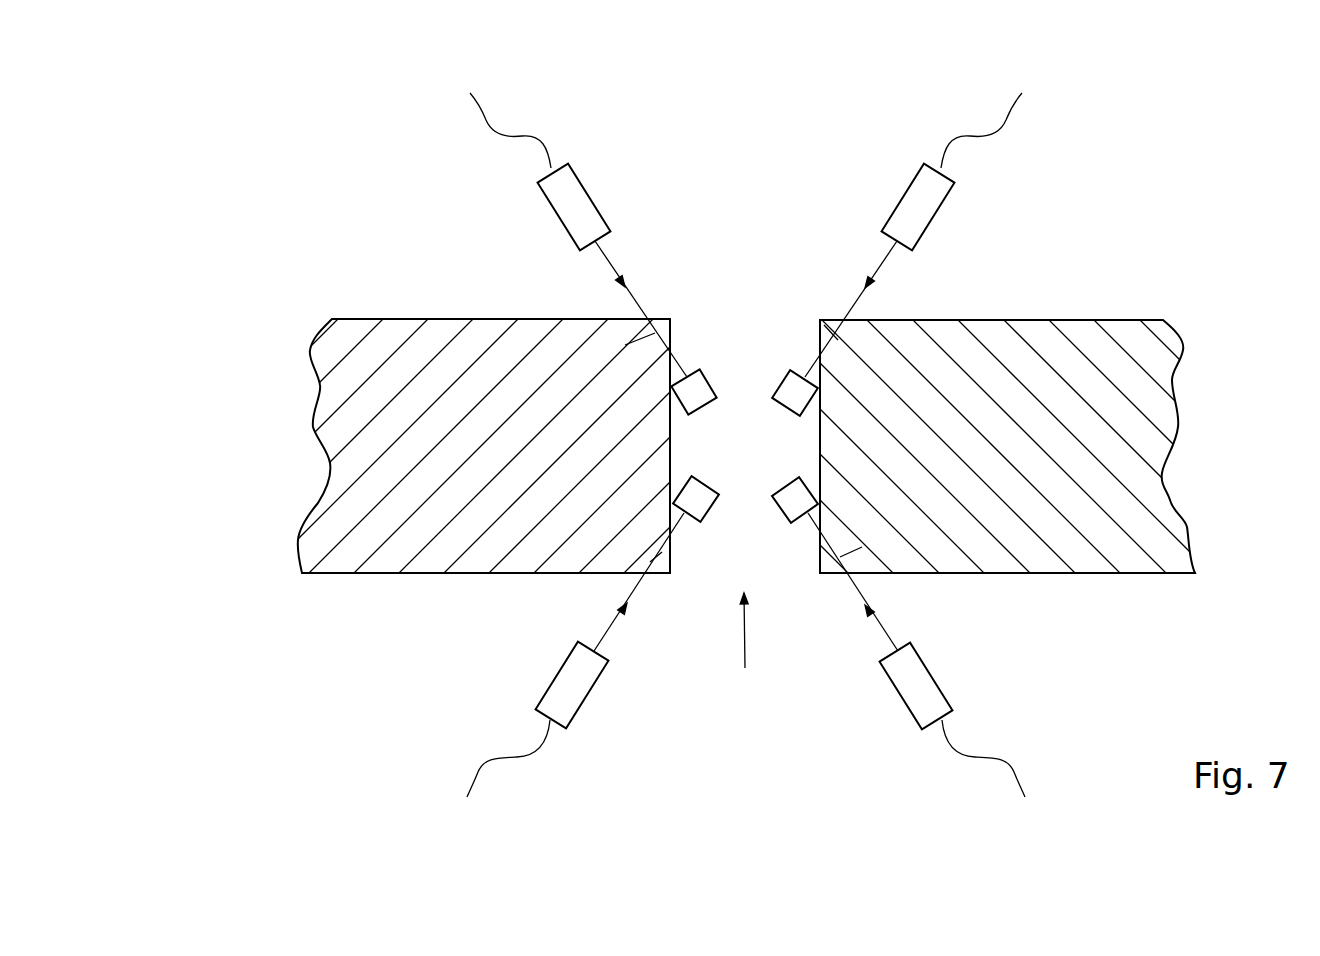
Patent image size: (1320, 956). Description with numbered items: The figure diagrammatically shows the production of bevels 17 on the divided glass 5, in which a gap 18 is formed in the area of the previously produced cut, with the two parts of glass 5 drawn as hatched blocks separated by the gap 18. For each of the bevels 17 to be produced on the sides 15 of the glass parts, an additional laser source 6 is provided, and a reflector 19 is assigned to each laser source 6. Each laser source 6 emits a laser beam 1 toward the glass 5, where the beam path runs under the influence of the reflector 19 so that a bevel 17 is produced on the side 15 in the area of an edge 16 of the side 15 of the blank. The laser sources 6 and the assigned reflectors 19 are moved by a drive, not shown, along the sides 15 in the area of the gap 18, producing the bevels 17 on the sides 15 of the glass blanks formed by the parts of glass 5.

The laser beam 1 is at (617, 270).
The glass 5 is at (362, 535).
The laser source 6 is at (592, 195).
The side 15 is at (745, 439).
The edge 16 is at (672, 318).
The bevel 17 is at (625, 345).
The gap 18 is at (747, 649).
The reflector 19 is at (782, 380).